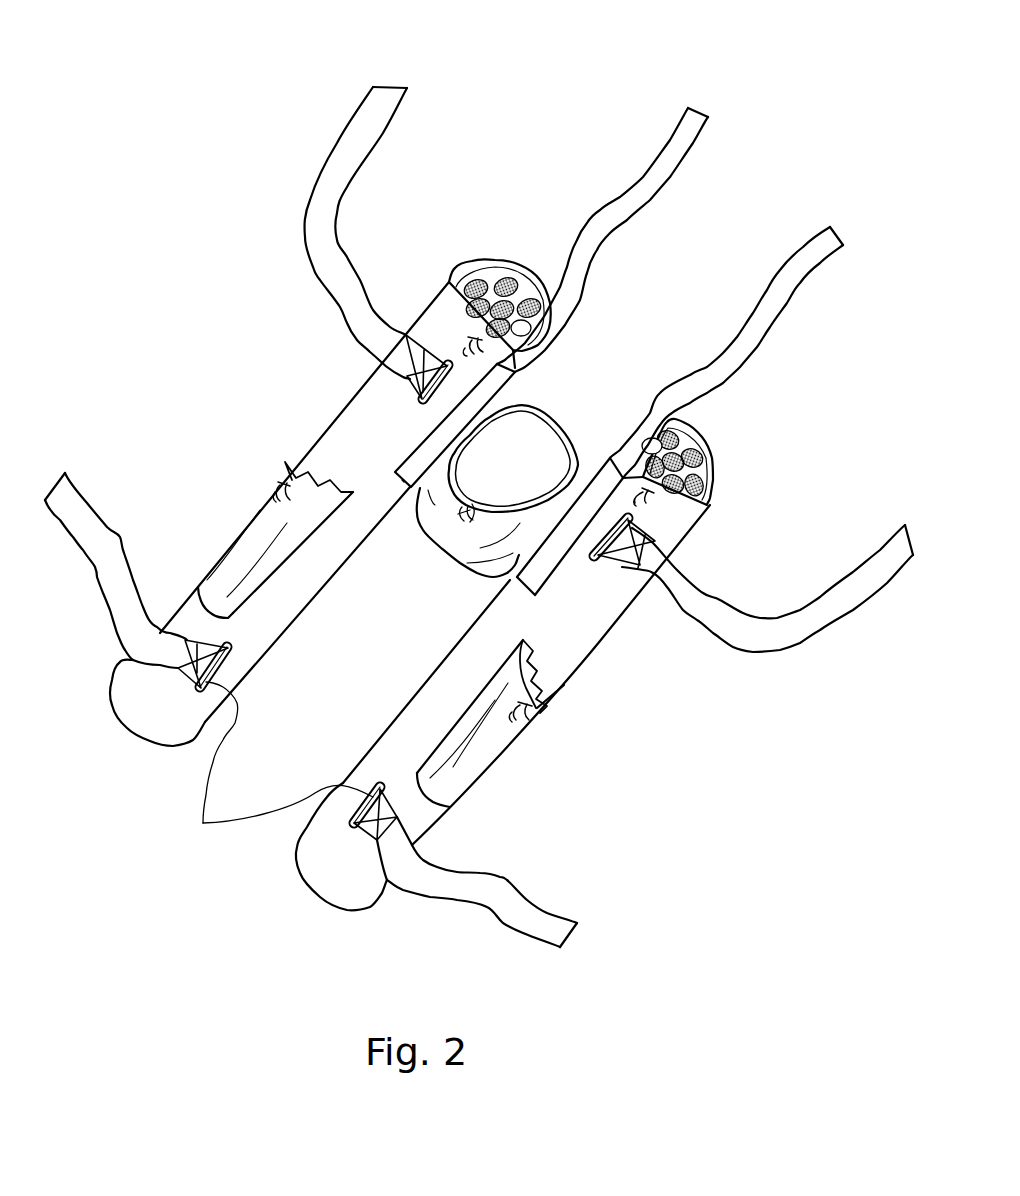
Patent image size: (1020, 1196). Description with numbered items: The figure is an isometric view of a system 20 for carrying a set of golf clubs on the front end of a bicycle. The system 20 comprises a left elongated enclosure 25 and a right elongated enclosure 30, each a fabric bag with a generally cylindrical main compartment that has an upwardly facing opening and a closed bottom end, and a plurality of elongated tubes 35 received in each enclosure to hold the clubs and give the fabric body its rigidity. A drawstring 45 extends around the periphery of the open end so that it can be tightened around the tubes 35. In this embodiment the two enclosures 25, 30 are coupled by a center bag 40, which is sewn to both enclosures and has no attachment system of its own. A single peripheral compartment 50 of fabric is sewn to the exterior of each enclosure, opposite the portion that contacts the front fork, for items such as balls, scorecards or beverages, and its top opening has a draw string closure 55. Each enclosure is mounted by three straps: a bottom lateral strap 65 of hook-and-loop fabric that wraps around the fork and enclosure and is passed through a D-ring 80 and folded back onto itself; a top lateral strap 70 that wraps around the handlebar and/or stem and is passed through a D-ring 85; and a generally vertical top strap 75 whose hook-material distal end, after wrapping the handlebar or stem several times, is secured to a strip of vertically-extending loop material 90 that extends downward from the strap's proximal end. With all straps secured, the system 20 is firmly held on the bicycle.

The system for carrying golf clubs on a bicycle 20 is at (472, 88).
The left elongated enclosure 25 is at (195, 615).
The right elongated enclosure 30 is at (383, 765).
The elongated tubes 35 is at (487, 275).
The center bag 40 is at (535, 437).
The drawstring 45 is at (469, 347).
The peripheral compartment 50 is at (245, 540).
The draw string closure 55 is at (280, 473).
The bottom lateral strap 65 is at (83, 520).
The top lateral strap 70 is at (337, 177).
The vertical top strap 75 is at (682, 134).
The D-ring 80 is at (280, 767).
The D-ring 85 is at (440, 362).
The vertically-extending loop material strip 90 is at (397, 481).